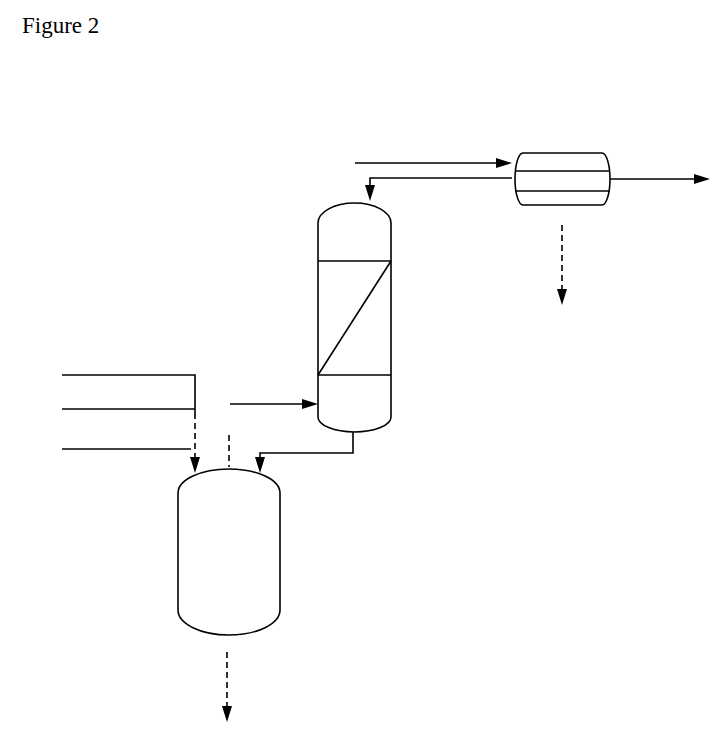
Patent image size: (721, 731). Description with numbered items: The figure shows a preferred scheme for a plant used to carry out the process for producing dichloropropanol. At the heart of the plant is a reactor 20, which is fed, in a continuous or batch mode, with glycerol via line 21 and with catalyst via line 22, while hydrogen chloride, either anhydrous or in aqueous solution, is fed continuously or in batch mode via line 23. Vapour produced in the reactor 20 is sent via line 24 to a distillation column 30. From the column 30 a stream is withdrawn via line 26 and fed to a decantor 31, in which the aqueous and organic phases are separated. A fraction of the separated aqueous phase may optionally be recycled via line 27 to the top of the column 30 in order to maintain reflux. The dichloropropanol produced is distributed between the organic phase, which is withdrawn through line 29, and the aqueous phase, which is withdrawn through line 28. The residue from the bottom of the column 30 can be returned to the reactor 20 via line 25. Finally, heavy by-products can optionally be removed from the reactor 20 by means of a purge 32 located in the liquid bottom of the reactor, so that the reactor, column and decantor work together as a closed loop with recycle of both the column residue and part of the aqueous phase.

The reactor 20 is at (206, 552).
The line 21 is at (111, 398).
The line 22 is at (108, 385).
The line 23 is at (106, 424).
The line 24 is at (273, 381).
The line 25 is at (307, 469).
The line 26 is at (433, 141).
The line 27 is at (438, 203).
The line 28 is at (660, 159).
The line 29 is at (581, 265).
The distillation column 30 is at (334, 317).
The decantor 31 is at (562, 155).
The purge 32 is at (250, 687).